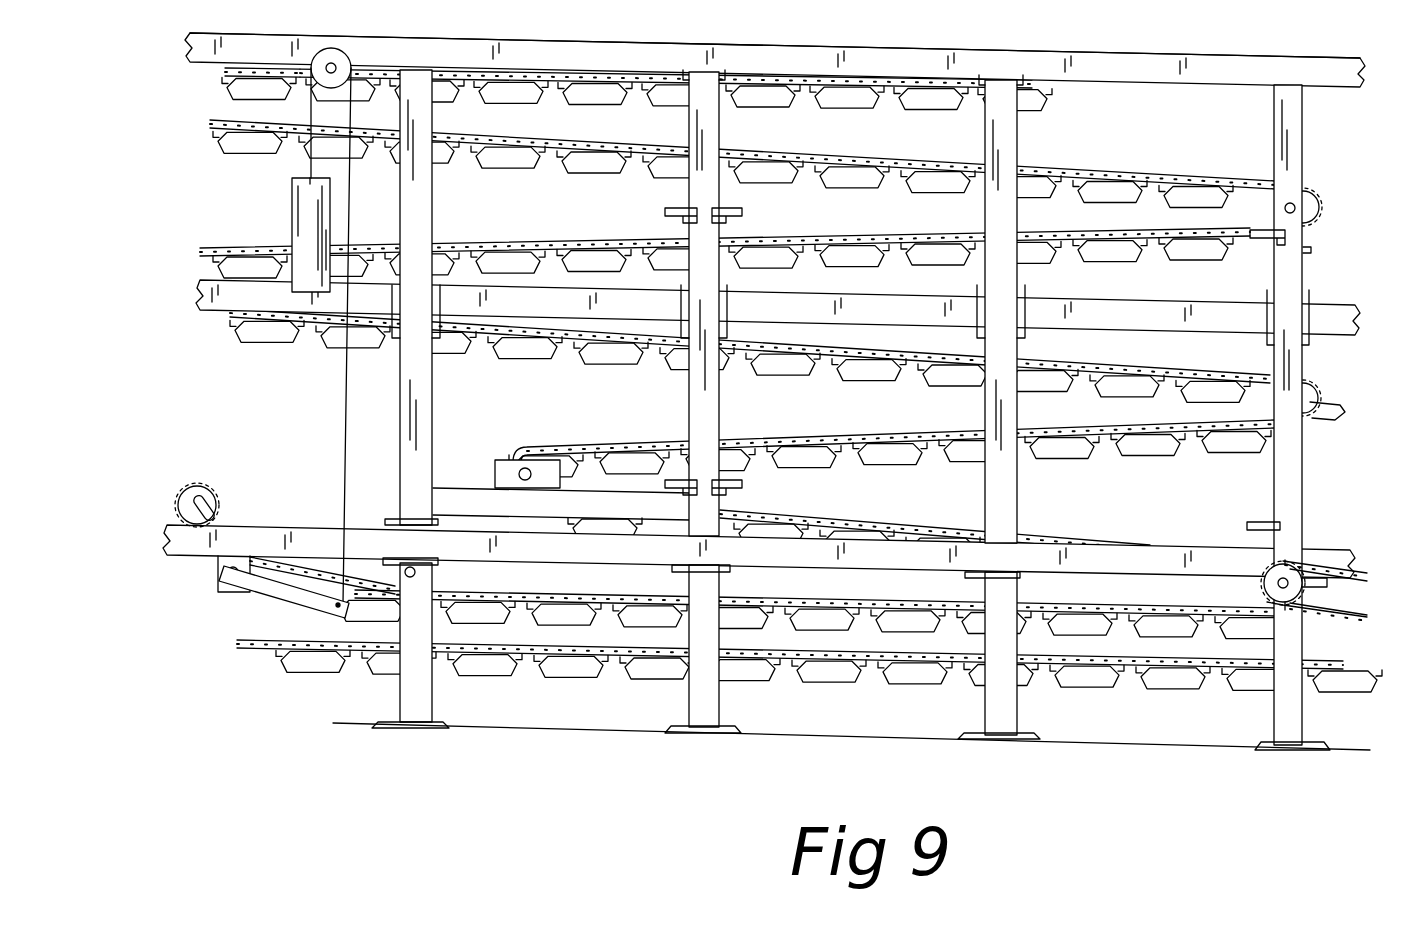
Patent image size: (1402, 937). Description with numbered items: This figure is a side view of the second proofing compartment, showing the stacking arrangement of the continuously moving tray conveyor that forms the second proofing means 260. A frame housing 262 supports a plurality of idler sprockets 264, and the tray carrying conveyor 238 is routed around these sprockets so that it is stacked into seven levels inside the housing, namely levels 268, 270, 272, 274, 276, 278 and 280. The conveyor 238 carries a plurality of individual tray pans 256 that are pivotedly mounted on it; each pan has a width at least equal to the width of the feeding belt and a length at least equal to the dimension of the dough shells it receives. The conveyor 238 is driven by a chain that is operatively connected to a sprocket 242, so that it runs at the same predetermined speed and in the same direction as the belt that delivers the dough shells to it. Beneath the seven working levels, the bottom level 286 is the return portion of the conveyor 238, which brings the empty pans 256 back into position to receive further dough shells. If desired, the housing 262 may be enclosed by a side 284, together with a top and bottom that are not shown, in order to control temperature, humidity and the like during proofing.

The tray carrying conveyor 238 is at (224, 76).
The sprocket 242 is at (1308, 596).
The tray pans 256 is at (588, 72).
The second proofing means 260 is at (1240, 57).
The frame housing 262 is at (973, 55).
The idler sprockets 264 is at (1283, 217).
The level 268 is at (888, 95).
The level 270 is at (850, 190).
The level 272 is at (851, 273).
The level 274 is at (868, 383).
The level 276 is at (893, 468).
The level 278 is at (1058, 538).
The level 280 is at (893, 598).
The side 284 is at (315, 703).
The bottom level 286 is at (885, 686).